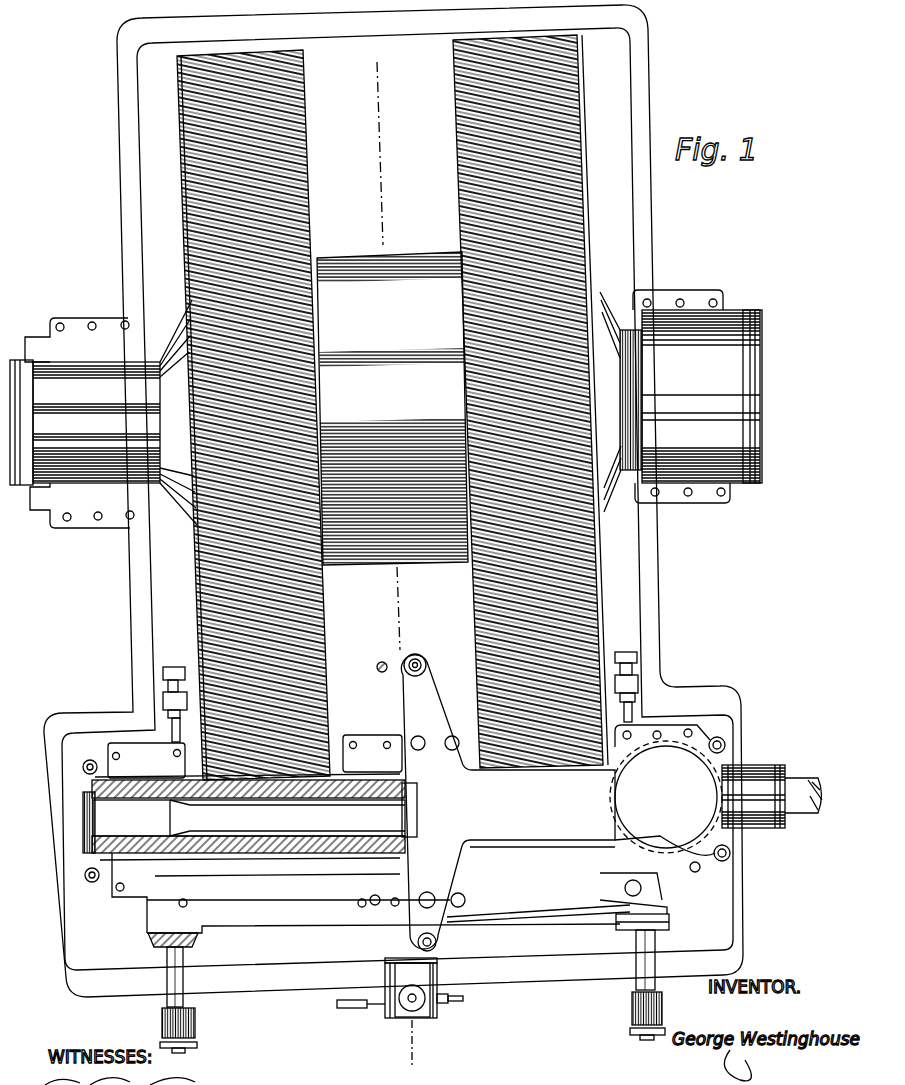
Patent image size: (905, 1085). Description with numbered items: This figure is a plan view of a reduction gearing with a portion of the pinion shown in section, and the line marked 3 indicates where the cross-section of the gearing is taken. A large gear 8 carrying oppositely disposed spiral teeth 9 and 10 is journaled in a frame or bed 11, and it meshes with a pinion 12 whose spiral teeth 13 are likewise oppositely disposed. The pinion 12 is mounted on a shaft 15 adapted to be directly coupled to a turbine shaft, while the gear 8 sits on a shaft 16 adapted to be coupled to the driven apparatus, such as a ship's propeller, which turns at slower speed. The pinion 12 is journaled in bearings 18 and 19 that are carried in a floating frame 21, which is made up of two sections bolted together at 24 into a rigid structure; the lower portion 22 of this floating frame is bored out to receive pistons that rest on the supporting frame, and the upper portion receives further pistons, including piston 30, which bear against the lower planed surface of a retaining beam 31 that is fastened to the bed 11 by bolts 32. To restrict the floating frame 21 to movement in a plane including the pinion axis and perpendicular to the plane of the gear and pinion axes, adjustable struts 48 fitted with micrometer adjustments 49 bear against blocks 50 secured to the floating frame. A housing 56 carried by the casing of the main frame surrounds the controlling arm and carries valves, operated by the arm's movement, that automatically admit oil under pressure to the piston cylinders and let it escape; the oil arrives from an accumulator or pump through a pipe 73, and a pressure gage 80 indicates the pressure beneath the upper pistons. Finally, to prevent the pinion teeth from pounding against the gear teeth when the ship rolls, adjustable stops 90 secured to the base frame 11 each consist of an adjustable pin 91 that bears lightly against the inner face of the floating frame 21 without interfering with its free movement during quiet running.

The section line 3— 3 is at (393, 563).
The gear 8 is at (428, 243).
The spiral teeth 9 is at (300, 140).
The spiral teeth 10 is at (456, 118).
The frame or bed 11 is at (138, 542).
The pinion 12 is at (160, 847).
The spiral teeth 13 is at (283, 853).
The shaft 15 is at (250, 813).
The shaft 16 is at (386, 409).
The bearing 18 is at (118, 862).
The bearing 19 is at (370, 847).
The floating frame 21 is at (318, 912).
The lower portion of floating frame 22 is at (251, 916).
The bolts 24 is at (122, 757).
The piston 30 is at (624, 865).
The retaining beam 31 is at (450, 858).
The bolts 32 is at (83, 765).
The adjustable struts 48 is at (173, 980).
The micrometer adjustments 49 is at (197, 1044).
The blocks 50 is at (148, 945).
The housing 56 is at (395, 1007).
The pipe 73 is at (447, 1003).
The pressure gage 80 is at (335, 1012).
The adjustable stops 90 is at (163, 693).
The adjustable pin 91 is at (173, 730).